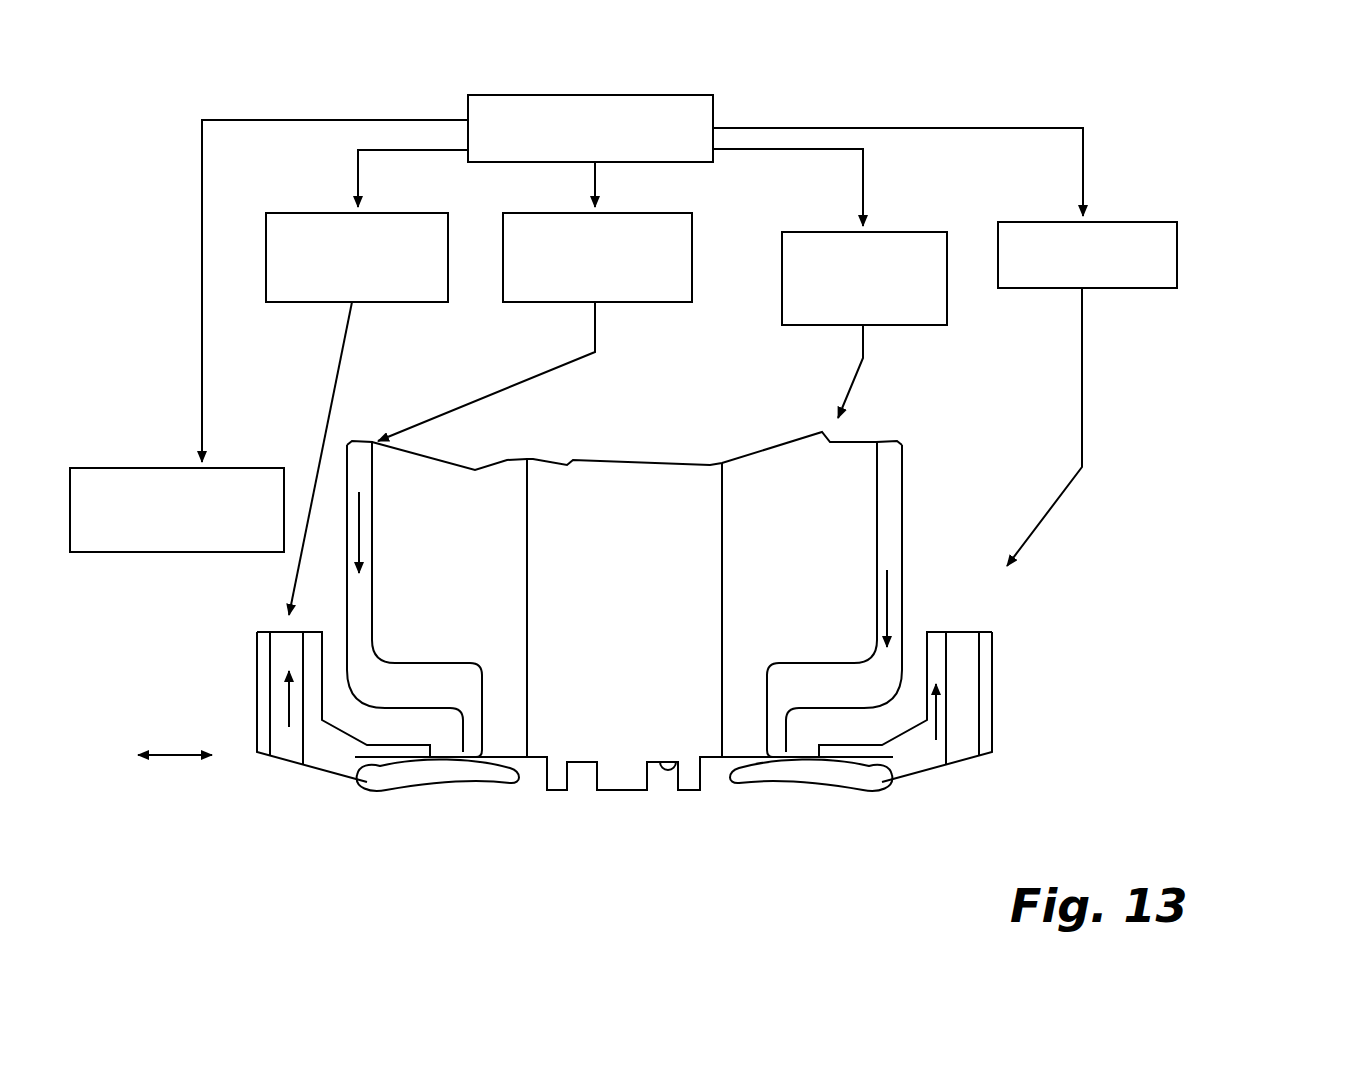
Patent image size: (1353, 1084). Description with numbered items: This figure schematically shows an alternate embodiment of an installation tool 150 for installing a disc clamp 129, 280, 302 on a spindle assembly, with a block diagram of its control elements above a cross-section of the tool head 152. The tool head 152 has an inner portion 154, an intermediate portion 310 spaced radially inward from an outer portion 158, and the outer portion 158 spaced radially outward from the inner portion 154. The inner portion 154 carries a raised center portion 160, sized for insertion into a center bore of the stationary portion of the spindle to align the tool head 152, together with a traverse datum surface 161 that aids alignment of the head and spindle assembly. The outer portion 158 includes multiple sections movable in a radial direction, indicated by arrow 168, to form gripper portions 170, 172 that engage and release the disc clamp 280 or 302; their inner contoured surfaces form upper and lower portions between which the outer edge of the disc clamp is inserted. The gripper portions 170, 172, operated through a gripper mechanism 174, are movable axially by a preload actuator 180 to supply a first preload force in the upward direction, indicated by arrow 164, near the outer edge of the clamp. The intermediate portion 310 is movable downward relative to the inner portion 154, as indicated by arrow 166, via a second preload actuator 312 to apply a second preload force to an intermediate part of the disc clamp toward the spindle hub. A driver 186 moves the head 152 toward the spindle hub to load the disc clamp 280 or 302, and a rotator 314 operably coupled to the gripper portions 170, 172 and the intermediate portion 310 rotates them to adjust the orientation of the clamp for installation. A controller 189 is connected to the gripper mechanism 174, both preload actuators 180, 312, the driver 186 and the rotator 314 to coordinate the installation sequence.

The controller 189 is at (662, 95).
The preload actuator 180 is at (315, 208).
The preload actuator 312 is at (617, 213).
The driver 186 is at (903, 227).
The rotator 314 is at (1123, 217).
The gripper mechanism 174 is at (88, 464).
The installation tool 150 is at (1257, 211).
The inner portion 154 is at (624, 658).
The intermediate portion 310 is at (362, 432).
The downward direction arrow 166 is at (365, 536).
The tool head 152 is at (920, 538).
The gripper portion 170 is at (252, 678).
The upward direction arrow 164 is at (287, 700).
The radial direction arrow 168 is at (168, 757).
The outer portion 158 is at (970, 627).
The gripper portion 172 is at (994, 662).
The raised center portion 160 is at (617, 800).
The traverse datum surface 161 is at (682, 760).
The disc clamp 129 is at (552, 817).
The disc clamp 280 is at (552, 817).
The disc clamp 302 is at (376, 782).